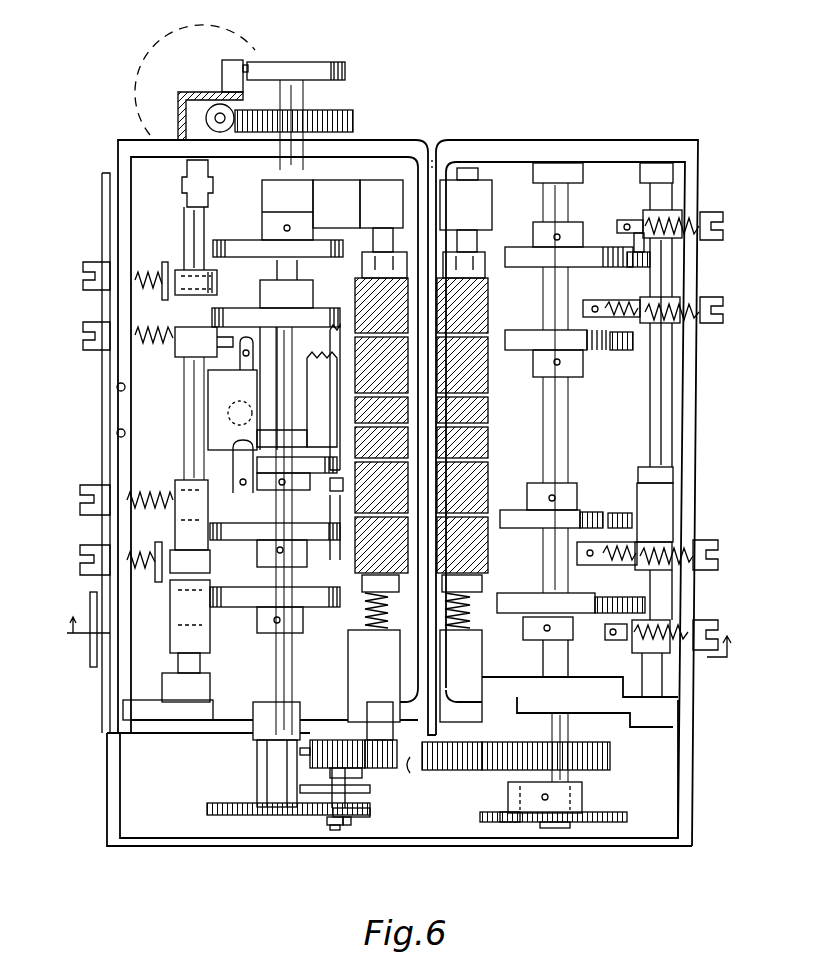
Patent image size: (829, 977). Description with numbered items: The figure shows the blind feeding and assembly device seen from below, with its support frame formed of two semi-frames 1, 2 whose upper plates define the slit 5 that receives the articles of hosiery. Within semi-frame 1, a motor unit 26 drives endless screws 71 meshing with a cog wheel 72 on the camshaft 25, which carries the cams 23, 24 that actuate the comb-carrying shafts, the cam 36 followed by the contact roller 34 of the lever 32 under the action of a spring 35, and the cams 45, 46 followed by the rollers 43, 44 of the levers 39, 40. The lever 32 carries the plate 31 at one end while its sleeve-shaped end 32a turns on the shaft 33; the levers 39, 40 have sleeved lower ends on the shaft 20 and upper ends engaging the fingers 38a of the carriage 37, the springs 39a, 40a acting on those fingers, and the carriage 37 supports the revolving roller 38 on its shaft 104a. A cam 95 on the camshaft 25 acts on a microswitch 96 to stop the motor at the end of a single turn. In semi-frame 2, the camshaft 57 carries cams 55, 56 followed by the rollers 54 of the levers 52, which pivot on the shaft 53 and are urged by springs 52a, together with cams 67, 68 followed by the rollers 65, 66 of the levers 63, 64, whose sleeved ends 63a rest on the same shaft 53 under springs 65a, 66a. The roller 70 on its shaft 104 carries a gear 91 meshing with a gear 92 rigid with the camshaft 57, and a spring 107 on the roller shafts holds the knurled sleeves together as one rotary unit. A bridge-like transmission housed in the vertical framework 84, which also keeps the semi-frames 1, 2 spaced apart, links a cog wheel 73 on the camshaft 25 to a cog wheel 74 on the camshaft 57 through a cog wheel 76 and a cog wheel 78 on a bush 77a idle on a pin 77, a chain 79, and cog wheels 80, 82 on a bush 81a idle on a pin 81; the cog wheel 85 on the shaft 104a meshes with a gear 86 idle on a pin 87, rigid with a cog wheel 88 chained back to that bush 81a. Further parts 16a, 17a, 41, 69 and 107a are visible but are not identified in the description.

The semi-frame 1 is at (392, 144).
The semi-frame 2 is at (614, 153).
The slit 5 is at (441, 150).
The contact 16a is at (125, 497).
The contact 17a is at (137, 352).
The shaft 20 is at (186, 462).
The cam 23 is at (328, 542).
The cam 24 is at (272, 320).
The camshaft 25 is at (274, 656).
The motor unit 26 is at (187, 49).
The plate 31 is at (244, 491).
The lever 32 is at (321, 399).
The sleeve-shaped end 32a is at (336, 485).
The shaft 33 is at (331, 316).
The revolving contact roller 34 is at (277, 443).
The spring 35 is at (232, 393).
The cam 36 is at (296, 493).
The carriage 37 is at (98, 672).
The revolving roller 38 is at (413, 300).
The fingers 38a is at (165, 268).
The lever 39 is at (173, 597).
The spring 39a is at (134, 573).
The lever 40 is at (218, 284).
The spring 40a is at (140, 275).
The cross bar 41 is at (211, 561).
The revolving contact roller 43 is at (170, 627).
The revolving contact roller 44 is at (176, 240).
The cam 45 is at (233, 607).
The cam 46 is at (238, 240).
The lever 52 is at (583, 311).
The spring 52a is at (668, 305).
The shaft 53 is at (653, 446).
The contact roller 54 is at (613, 351).
The cam 55 is at (510, 512).
The cam 56 is at (487, 391).
The camshaft 57 is at (563, 446).
The lever 63 is at (606, 630).
The sleeved end 63a is at (628, 646).
The lever 64 is at (620, 221).
The contact roller 65 is at (622, 597).
The spring 65a is at (673, 622).
The contact roller 66 is at (628, 266).
The spring 66a is at (666, 226).
The cam 67 is at (507, 593).
The cam 68 is at (523, 268).
The block 69 is at (492, 200).
The roller 70 is at (488, 403).
The endless screw 71 is at (206, 118).
The cog wheel 72 is at (340, 112).
The cog wheel 73 is at (210, 808).
The cog wheel 74 is at (610, 823).
The cog wheel 76 is at (505, 810).
The pin 77 is at (557, 829).
The bush 77a is at (584, 797).
The cog wheel 78 is at (570, 752).
The chain 79 is at (409, 767).
The cog wheel 80 is at (300, 753).
The pin 81 is at (334, 831).
The bush 81a is at (351, 824).
The cog wheel 82 is at (366, 812).
The vertical framework 84 is at (108, 779).
The cog wheel 85 is at (380, 740).
The gear 86 is at (327, 740).
The pin 87 is at (313, 806).
The cog wheel 88 is at (300, 788).
The gear 91 is at (444, 740).
The gear 92 is at (612, 758).
The cam 95 is at (298, 67).
The microswitch 96 is at (240, 62).
The shaft 104 is at (466, 205).
The shaft 104a is at (386, 232).
The spring 107 is at (461, 676).
The block 107a is at (362, 618).